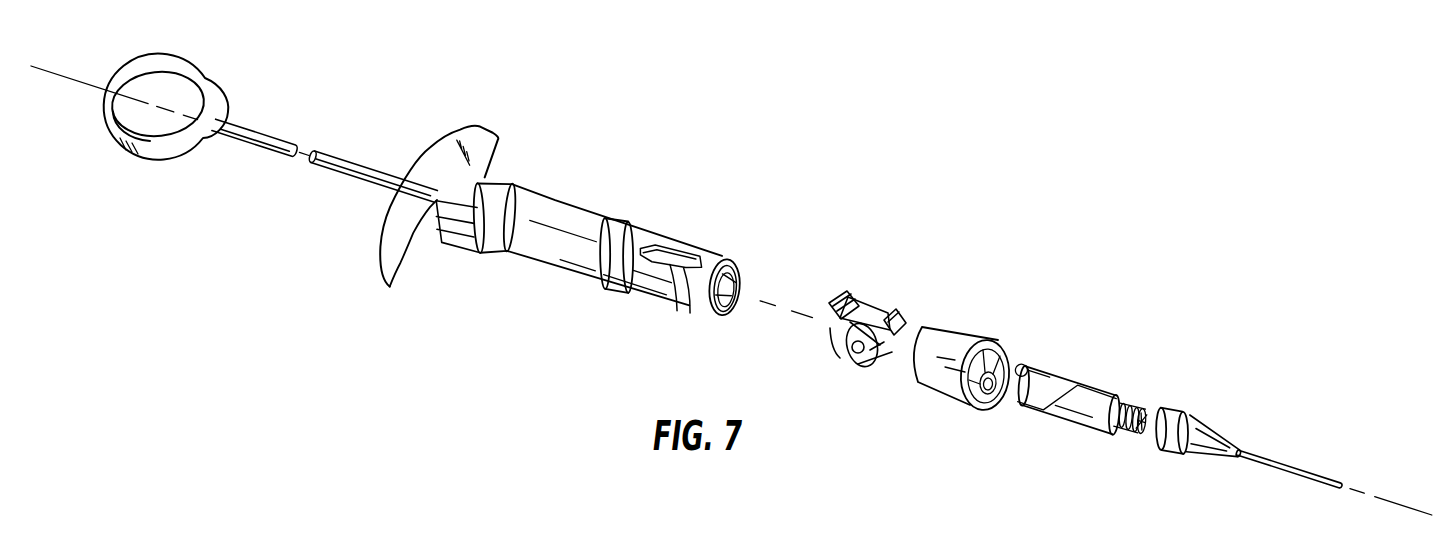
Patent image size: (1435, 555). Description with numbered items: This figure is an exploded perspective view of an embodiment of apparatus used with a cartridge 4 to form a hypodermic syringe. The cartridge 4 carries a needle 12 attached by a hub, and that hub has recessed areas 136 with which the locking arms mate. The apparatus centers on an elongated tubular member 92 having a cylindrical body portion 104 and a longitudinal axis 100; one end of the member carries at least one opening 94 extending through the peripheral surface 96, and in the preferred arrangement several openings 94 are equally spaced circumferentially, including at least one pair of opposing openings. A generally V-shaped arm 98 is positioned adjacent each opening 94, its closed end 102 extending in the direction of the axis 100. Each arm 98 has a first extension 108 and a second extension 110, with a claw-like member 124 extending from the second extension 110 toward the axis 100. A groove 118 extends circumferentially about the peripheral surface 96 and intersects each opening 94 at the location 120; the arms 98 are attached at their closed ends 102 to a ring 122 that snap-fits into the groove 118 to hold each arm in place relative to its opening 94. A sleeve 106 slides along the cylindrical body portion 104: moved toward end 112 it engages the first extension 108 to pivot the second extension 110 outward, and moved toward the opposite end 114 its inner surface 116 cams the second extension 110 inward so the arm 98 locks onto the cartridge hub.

The cartridge 4 is at (1086, 372).
The needle 12 is at (1259, 462).
The elongated tubular member 92 is at (586, 203).
The opening 94 is at (657, 250).
The peripheral surface 96 is at (610, 288).
The arm 98 is at (874, 325).
The longitudinal axis 100 is at (767, 312).
The closed end 102 is at (843, 320).
The cylindrical body portion 104 is at (637, 278).
The sleeve 106 is at (972, 330).
The first extension 108 is at (848, 302).
The second extension 110 is at (880, 310).
The end 112 is at (523, 256).
The opposite end 114 is at (730, 258).
The inner surface 116 is at (1013, 350).
The groove 118 is at (670, 300).
The intersection 120 is at (707, 252).
The ring 122 is at (845, 345).
The claw-like member 124 is at (900, 337).
The recessed area 136 is at (1213, 433).